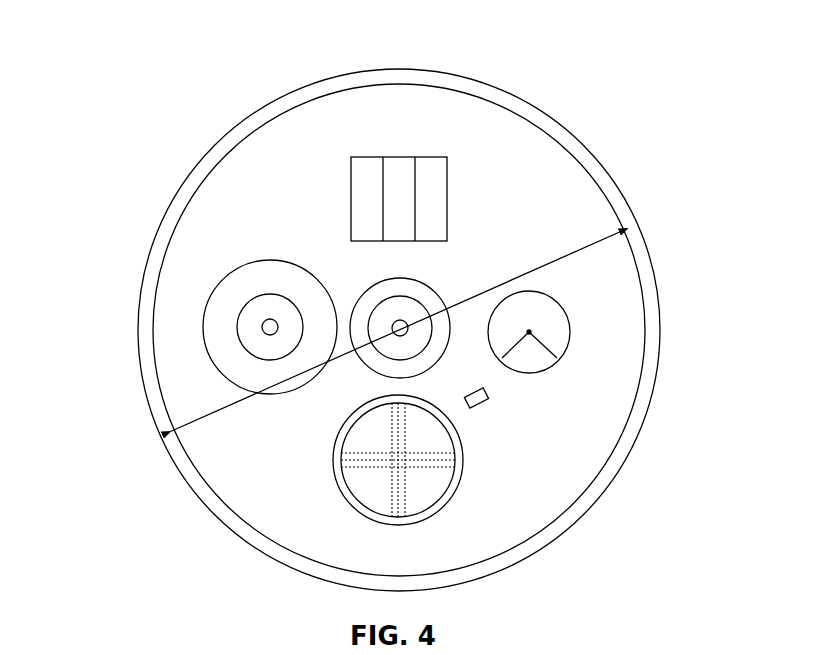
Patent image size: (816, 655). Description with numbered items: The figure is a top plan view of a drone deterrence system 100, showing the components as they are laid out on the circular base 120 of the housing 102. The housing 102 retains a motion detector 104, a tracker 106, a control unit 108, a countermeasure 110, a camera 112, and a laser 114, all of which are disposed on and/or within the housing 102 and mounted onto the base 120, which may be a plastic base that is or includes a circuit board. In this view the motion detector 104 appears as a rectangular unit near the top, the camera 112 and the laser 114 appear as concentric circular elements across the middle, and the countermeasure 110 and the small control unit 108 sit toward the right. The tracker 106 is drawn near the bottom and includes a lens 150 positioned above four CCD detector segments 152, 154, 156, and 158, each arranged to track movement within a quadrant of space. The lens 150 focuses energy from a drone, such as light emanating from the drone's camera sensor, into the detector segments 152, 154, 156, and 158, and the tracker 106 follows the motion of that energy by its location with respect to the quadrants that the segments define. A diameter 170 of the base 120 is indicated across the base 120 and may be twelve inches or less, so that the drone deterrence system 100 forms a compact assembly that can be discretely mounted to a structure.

The drone deterrence system 100 is at (637, 76).
The housing 102 is at (609, 161).
The motion detector 104 is at (433, 157).
The tracker 106 is at (372, 518).
The control unit 108 is at (484, 405).
The countermeasure 110 is at (570, 332).
The camera 112 is at (228, 305).
The laser 114 is at (422, 302).
The base 120 is at (647, 308).
The lens 150 is at (458, 480).
The CCD detector segment 152 is at (450, 483).
The CCD detector segment 154 is at (450, 483).
The CCD detector segment 156 is at (455, 437).
The CCD detector segment 158 is at (455, 437).
The diameter 170 is at (200, 418).